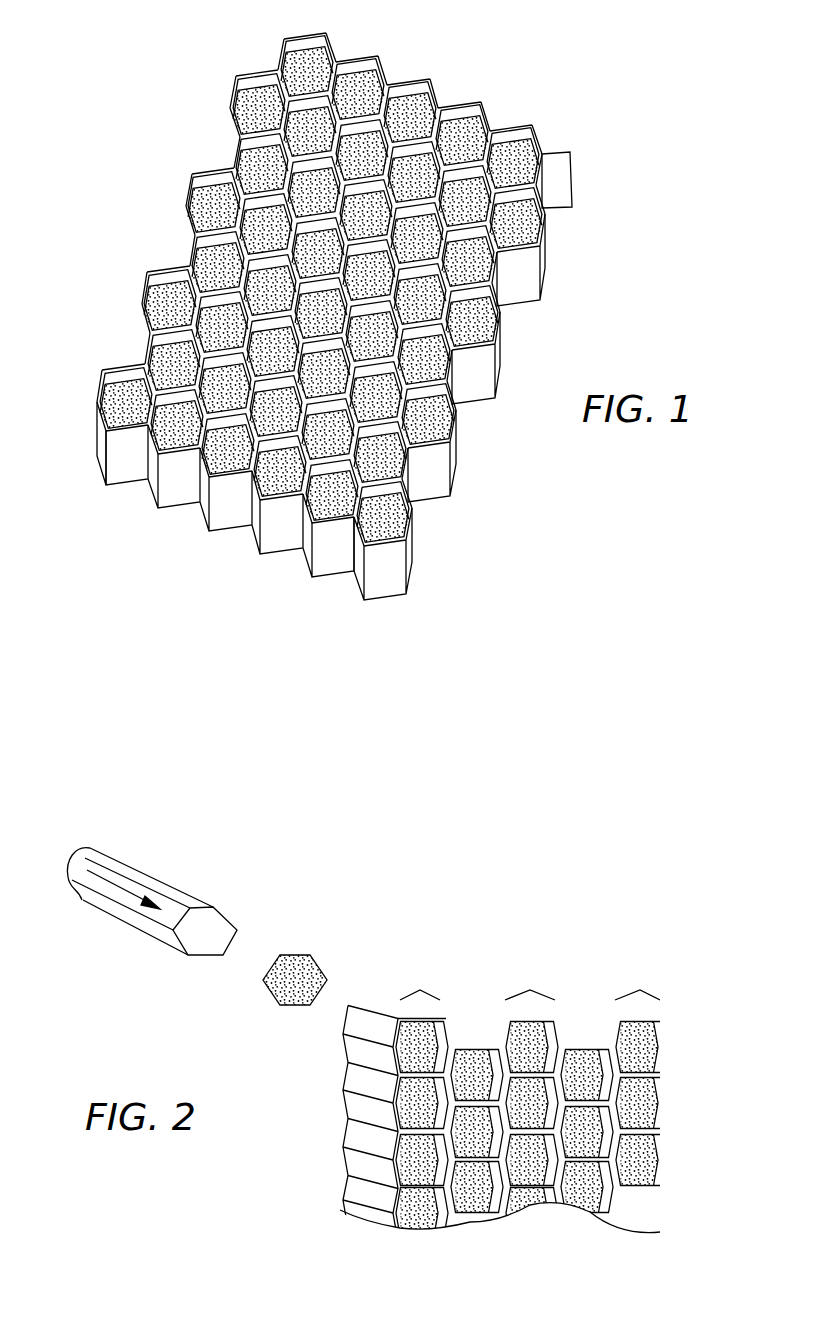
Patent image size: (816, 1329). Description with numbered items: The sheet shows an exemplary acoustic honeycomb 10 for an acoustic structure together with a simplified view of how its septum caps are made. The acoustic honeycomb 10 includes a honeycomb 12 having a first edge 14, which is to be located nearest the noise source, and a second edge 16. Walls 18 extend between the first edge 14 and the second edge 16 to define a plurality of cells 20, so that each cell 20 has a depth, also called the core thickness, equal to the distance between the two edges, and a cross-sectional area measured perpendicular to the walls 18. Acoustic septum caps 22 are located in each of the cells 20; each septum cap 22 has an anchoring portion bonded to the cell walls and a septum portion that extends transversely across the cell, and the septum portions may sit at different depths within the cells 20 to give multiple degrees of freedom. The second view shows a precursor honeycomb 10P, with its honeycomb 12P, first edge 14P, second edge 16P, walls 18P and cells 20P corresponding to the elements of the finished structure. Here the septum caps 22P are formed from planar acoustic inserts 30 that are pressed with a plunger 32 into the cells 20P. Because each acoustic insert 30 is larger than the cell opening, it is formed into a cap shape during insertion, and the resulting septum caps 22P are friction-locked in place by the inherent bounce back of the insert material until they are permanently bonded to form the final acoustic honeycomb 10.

In FIG. 1, the acoustic honeycomb 10 is at (545, 46).
In FIG. 1, the honeycomb 12 is at (218, 233).
In FIG. 1, the first edge 14 is at (100, 417).
In FIG. 1, the second edge 16 is at (110, 472).
In FIG. 1, the walls 18 is at (248, 156).
In FIG. 1, the cells 20 is at (352, 66).
In FIG. 1, the acoustic septum caps 22 is at (407, 520).
In FIG. 2, the honeycomb 10P is at (600, 948).
In FIG. 2, the honeycomb 12P is at (618, 1057).
In FIG. 2, the first edge 14P is at (403, 1197).
In FIG. 2, the second edge 16P is at (355, 1158).
In FIG. 2, the walls 18P is at (612, 1190).
In FIG. 2, the cells 20P is at (598, 1124).
In FIG. 2, the septum caps 22P is at (545, 1160).
In FIG. 2, the planar acoustic inserts 30 is at (303, 973).
In FIG. 2, the plunger 32 is at (113, 915).